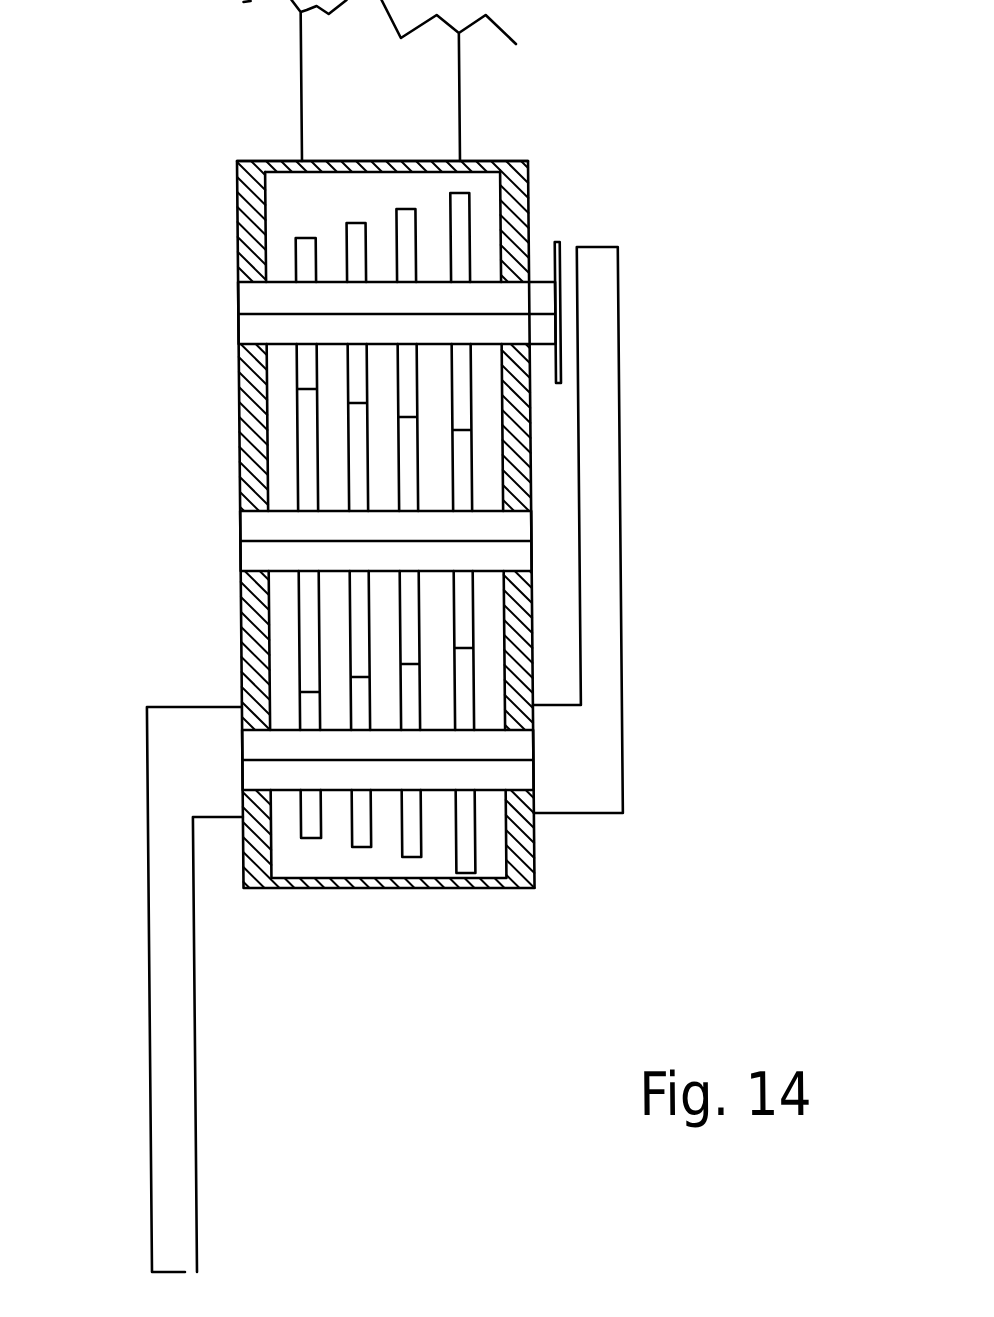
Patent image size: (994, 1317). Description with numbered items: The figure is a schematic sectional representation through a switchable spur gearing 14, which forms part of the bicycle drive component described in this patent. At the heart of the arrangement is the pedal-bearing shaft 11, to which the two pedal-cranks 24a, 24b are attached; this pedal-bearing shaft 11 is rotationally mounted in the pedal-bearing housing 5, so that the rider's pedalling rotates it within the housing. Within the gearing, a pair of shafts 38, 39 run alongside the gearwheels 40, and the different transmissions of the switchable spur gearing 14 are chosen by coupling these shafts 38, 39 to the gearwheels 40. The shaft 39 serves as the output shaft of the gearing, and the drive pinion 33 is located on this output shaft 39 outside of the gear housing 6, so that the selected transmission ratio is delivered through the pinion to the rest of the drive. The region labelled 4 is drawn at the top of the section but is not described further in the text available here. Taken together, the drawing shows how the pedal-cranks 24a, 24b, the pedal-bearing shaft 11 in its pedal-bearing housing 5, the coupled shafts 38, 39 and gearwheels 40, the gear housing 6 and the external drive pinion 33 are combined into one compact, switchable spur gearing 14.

The heating device 4 is at (395, 108).
The pedal-bearing housing 5 is at (514, 852).
The gear housing 6 is at (513, 185).
The pedal-bearing shaft 11 is at (382, 773).
The switchable spur gearing 14 is at (676, 312).
The pedal-crank 24a is at (156, 887).
The pedal-crank 24b is at (603, 633).
The drive pinion 33 is at (556, 242).
The shaft 38 is at (243, 555).
The output shaft 39 is at (252, 303).
The gearwheels 40 is at (461, 489).